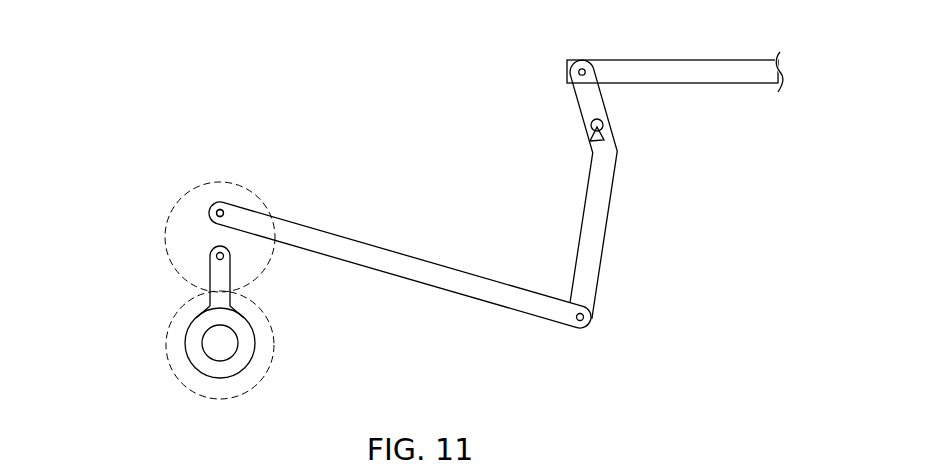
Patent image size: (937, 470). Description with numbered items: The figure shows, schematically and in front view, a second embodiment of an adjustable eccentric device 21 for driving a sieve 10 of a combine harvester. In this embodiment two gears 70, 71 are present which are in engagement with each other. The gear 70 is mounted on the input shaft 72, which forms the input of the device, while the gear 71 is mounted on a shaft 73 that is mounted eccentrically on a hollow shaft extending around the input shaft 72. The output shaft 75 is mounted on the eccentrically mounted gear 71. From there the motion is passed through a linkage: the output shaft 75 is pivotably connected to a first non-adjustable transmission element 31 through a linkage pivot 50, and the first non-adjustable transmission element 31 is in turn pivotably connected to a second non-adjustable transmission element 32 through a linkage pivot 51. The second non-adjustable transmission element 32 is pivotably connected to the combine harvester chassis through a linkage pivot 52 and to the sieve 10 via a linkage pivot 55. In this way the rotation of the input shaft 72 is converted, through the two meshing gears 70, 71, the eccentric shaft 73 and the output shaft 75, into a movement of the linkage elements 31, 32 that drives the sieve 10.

The sieve 10 is at (706, 58).
The adjustable eccentric device 21 is at (118, 322).
The first non-adjustable transmission element 31 is at (437, 266).
The second non-adjustable transmission element 32 is at (604, 218).
The linkage pivot 50 is at (227, 212).
The linkage pivot 51 is at (580, 326).
The linkage pivot 52 is at (606, 127).
The linkage pivot 55 is at (582, 67).
The gear 70 is at (188, 381).
The gear 71 is at (177, 246).
The input shaft 72 is at (226, 343).
The shaft 73 is at (228, 258).
The output shaft 75 is at (220, 207).